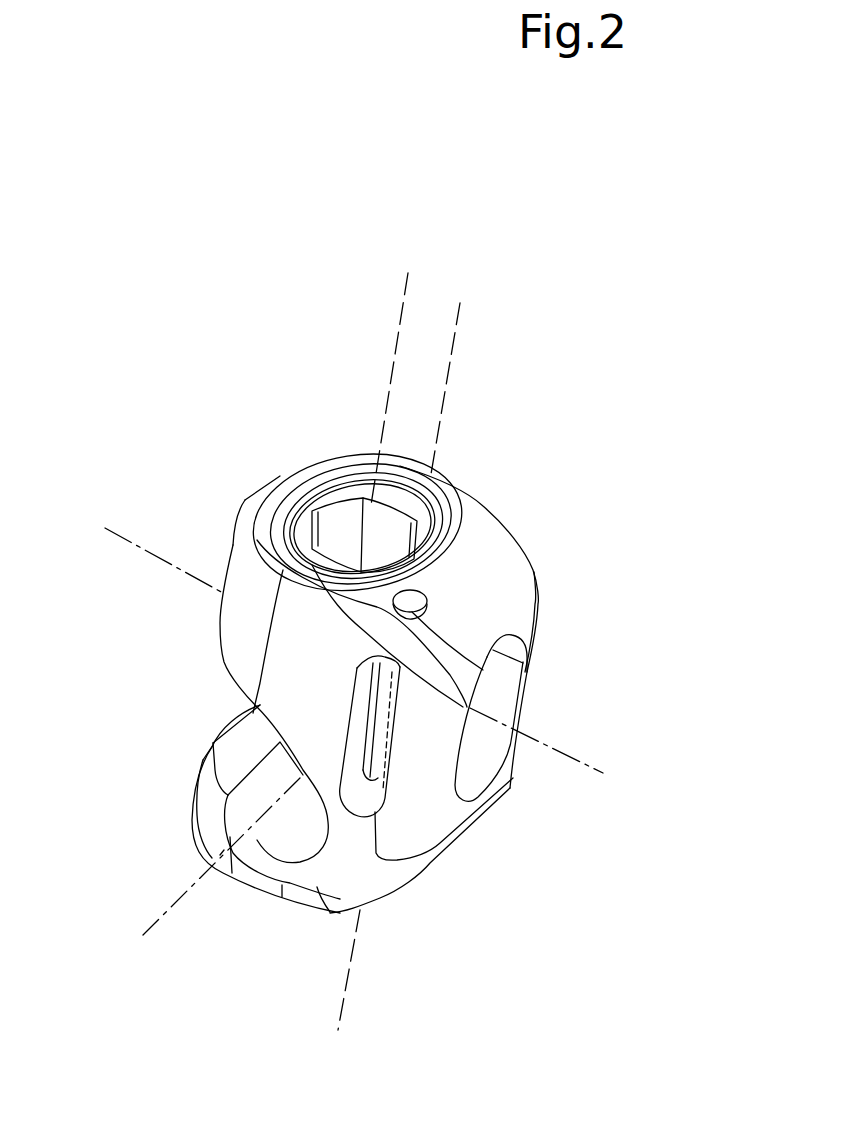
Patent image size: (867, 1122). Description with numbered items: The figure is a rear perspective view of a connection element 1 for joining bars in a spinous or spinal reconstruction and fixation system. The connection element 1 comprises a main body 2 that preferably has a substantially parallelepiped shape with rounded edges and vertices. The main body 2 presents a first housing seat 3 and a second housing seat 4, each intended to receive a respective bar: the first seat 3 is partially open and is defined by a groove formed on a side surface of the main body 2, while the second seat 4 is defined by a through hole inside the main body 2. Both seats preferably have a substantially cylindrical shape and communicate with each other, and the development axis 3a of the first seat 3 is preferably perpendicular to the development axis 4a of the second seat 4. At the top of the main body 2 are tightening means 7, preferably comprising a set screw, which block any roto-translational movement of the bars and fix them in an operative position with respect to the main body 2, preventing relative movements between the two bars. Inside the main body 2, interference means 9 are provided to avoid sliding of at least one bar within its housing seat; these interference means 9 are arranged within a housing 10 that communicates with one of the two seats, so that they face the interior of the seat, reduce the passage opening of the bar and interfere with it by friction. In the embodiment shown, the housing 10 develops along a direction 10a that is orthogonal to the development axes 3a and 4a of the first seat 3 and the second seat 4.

The connection element 1 is at (200, 372).
The main body 2 is at (533, 563).
The first housing seat 3 is at (305, 832).
The development axis of the first seat 3a is at (158, 920).
The second housing seat 4 is at (495, 683).
The development axis of the second seat 4a is at (590, 763).
The tightening means 7 is at (403, 503).
The interference means 9 is at (413, 598).
The housing 10 is at (385, 743).
The direction of the housing 10a is at (458, 327).